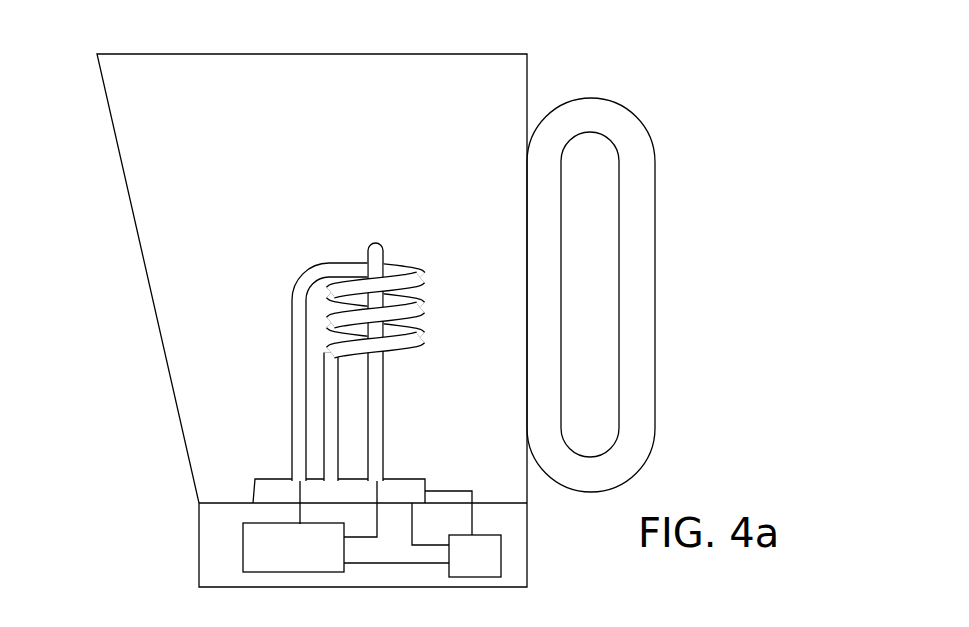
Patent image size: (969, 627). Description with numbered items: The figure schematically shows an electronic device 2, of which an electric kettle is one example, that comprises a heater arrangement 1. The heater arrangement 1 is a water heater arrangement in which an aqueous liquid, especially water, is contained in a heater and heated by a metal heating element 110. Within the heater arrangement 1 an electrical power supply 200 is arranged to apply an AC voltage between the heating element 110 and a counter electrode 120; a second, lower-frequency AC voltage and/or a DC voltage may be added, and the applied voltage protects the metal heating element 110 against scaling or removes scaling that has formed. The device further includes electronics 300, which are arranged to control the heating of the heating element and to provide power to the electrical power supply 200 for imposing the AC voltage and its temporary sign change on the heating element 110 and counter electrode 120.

The heater arrangement 1 is at (145, 361).
The electronic device 2 is at (663, 118).
The heating element 110 is at (377, 242).
The counter electrode 120 is at (303, 297).
The electrical power supply 200 is at (232, 550).
The electronics 300 is at (505, 554).